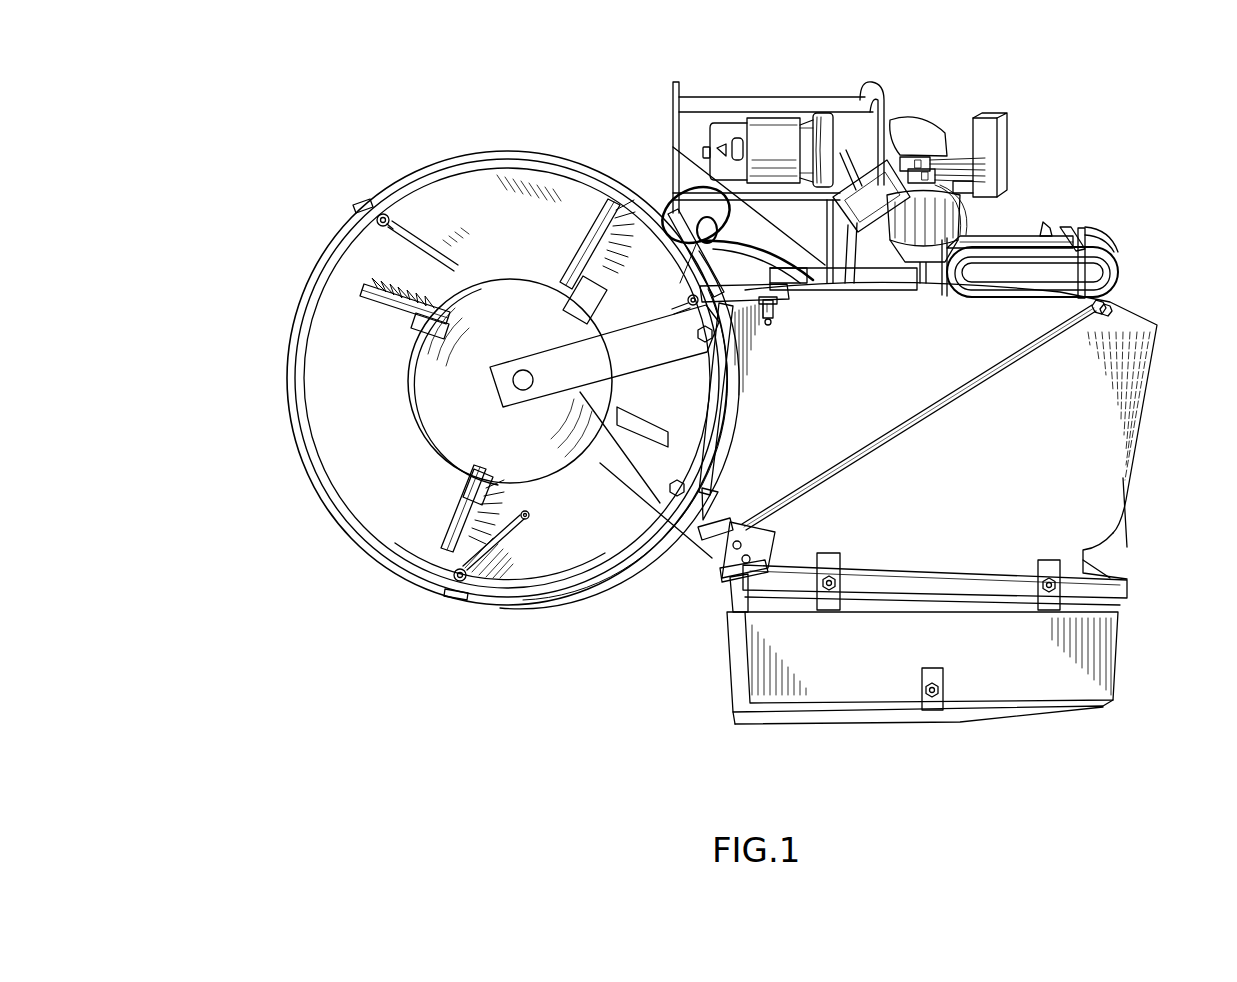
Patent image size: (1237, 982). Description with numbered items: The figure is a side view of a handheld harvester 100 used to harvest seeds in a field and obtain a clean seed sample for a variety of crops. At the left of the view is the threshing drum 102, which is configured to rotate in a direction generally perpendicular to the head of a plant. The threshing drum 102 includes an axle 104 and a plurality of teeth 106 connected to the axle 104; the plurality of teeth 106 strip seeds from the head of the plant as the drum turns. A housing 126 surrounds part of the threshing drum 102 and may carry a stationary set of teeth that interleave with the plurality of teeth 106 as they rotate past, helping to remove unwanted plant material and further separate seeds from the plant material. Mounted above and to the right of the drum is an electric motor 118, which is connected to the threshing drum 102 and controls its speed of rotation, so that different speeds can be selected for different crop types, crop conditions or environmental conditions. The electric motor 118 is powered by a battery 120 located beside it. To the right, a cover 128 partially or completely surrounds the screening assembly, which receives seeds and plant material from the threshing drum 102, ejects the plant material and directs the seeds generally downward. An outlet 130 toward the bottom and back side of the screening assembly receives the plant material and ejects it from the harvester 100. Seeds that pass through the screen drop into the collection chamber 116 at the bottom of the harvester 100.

The harvester 100 is at (291, 110).
The threshing drum 102 is at (323, 248).
The axle 104 is at (546, 483).
The plurality of teeth 106 is at (386, 316).
The collection chamber 116 is at (1118, 652).
The electric motor 118 is at (776, 126).
The battery 120 is at (1103, 233).
The housing 126 is at (528, 150).
The cover 128 is at (1133, 440).
The outlet 130 is at (1108, 547).